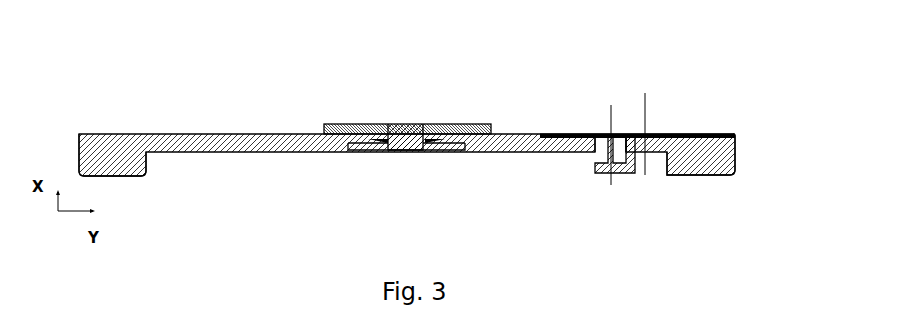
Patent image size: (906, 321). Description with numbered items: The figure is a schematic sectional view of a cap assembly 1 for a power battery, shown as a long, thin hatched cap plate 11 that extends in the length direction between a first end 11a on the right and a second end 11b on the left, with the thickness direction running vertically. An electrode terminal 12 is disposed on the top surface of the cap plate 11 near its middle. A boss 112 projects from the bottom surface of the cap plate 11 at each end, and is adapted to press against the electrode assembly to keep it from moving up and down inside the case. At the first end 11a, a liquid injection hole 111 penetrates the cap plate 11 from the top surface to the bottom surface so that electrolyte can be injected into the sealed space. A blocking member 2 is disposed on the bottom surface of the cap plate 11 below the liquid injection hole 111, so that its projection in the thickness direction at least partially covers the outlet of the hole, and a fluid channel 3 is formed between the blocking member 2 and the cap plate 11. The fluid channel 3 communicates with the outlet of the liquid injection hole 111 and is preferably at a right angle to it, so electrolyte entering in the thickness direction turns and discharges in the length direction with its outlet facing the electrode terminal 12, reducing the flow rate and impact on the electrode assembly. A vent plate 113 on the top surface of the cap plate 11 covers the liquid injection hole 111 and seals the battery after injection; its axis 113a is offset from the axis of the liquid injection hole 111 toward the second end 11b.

The cap assembly 1 is at (423, 32).
The cap plate 11 is at (240, 138).
The first end 11a is at (735, 130).
The second end 11b is at (92, 128).
The electrode terminal 12 is at (410, 123).
The liquid injection hole 111 is at (605, 147).
The boss 112 is at (138, 166).
The vent plate 113 is at (683, 133).
The axis 113a is at (645, 103).
The blocking member 2 is at (602, 175).
The fluid channel 3 is at (599, 158).